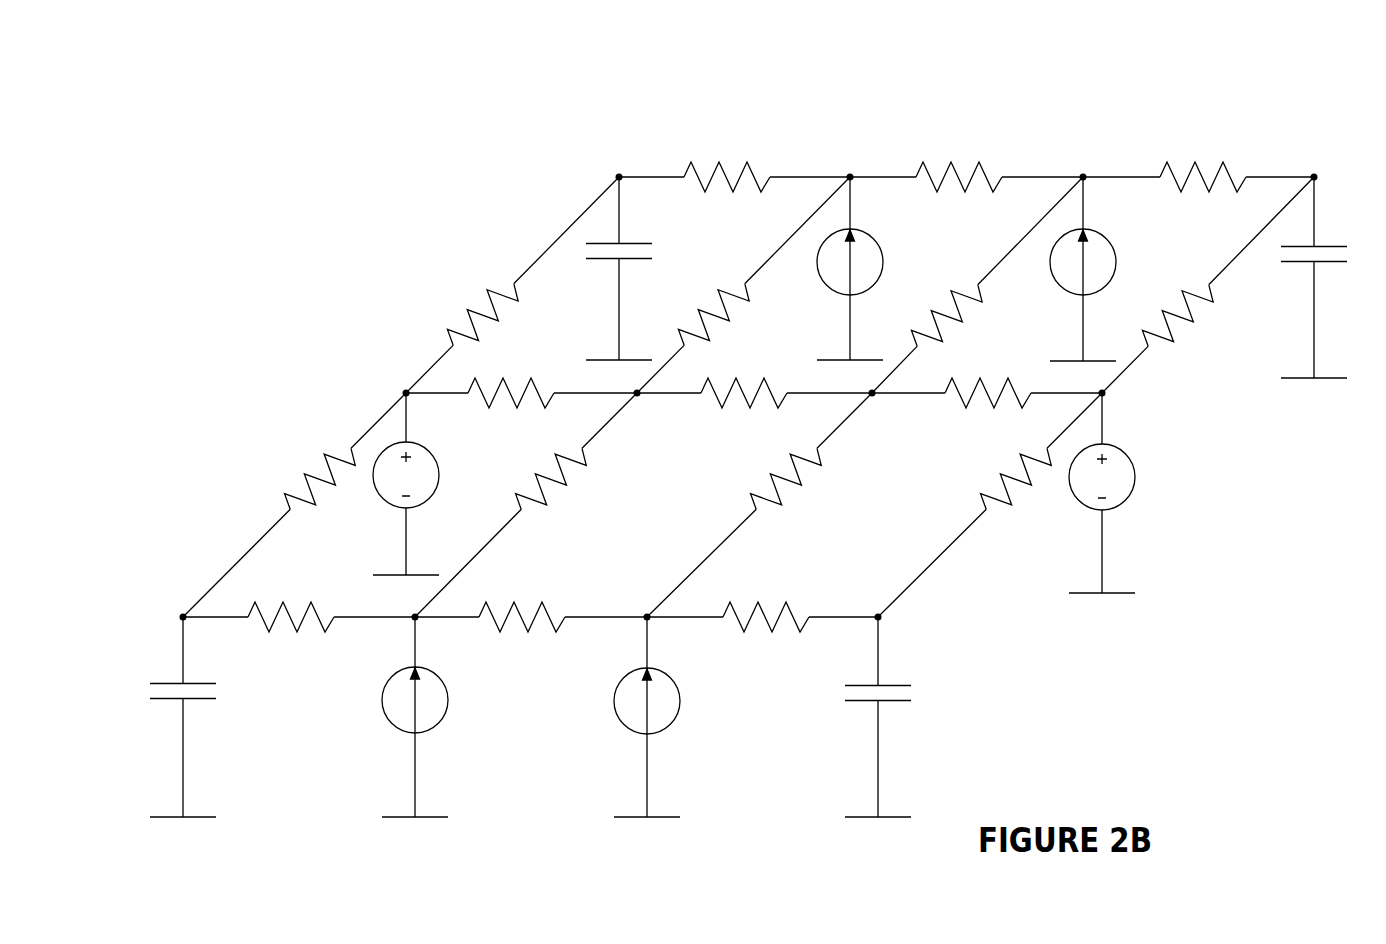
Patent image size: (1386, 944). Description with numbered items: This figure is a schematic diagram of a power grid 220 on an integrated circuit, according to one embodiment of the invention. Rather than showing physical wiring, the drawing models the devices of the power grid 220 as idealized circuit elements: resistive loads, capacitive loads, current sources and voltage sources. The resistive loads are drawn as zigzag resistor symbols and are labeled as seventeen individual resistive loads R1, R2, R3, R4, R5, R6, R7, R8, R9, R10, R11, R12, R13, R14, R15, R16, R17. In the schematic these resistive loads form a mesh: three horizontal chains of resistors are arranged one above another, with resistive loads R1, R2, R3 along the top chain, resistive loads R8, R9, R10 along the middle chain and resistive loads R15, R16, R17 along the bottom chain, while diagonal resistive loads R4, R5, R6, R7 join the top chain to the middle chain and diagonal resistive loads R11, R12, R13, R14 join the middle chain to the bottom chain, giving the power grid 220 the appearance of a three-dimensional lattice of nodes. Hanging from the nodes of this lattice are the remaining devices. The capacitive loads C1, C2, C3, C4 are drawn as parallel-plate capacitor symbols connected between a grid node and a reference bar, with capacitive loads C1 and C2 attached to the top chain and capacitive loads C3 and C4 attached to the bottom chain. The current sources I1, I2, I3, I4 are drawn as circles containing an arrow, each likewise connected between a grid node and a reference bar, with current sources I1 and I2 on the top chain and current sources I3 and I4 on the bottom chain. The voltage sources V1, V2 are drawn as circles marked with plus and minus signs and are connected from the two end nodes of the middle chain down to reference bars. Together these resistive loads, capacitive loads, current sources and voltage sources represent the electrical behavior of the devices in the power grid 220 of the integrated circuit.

The power grid 220 is at (750, 72).
The resistive load R1 is at (727, 154).
The resistive load R2 is at (959, 154).
The resistive load R3 is at (1203, 154).
The resistive load R4 is at (483, 314).
The resistive load R5 is at (714, 314).
The resistive load R6 is at (947, 315).
The resistive load R7 is at (1178, 315).
The resistive load R8 is at (511, 408).
The resistive load R9 is at (744, 407).
The resistive load R10 is at (988, 409).
The resistive load R11 is at (320, 479).
The resistive load R12 is at (558, 479).
The resistive load R13 is at (790, 479).
The resistive load R14 is at (1017, 488).
The resistive load R15 is at (291, 605).
The resistive load R16 is at (522, 604).
The resistive load R17 is at (766, 604).
The capacitive load C1 is at (634, 268).
The capacitive load C2 is at (1309, 277).
The capacitive load C3 is at (197, 717).
The capacitive load C4 is at (892, 717).
The current source I1 is at (870, 268).
The current source I2 is at (1103, 269).
The current source I3 is at (435, 717).
The current source I4 is at (668, 717).
The voltage source V1 is at (428, 484).
The voltage source V2 is at (1124, 493).